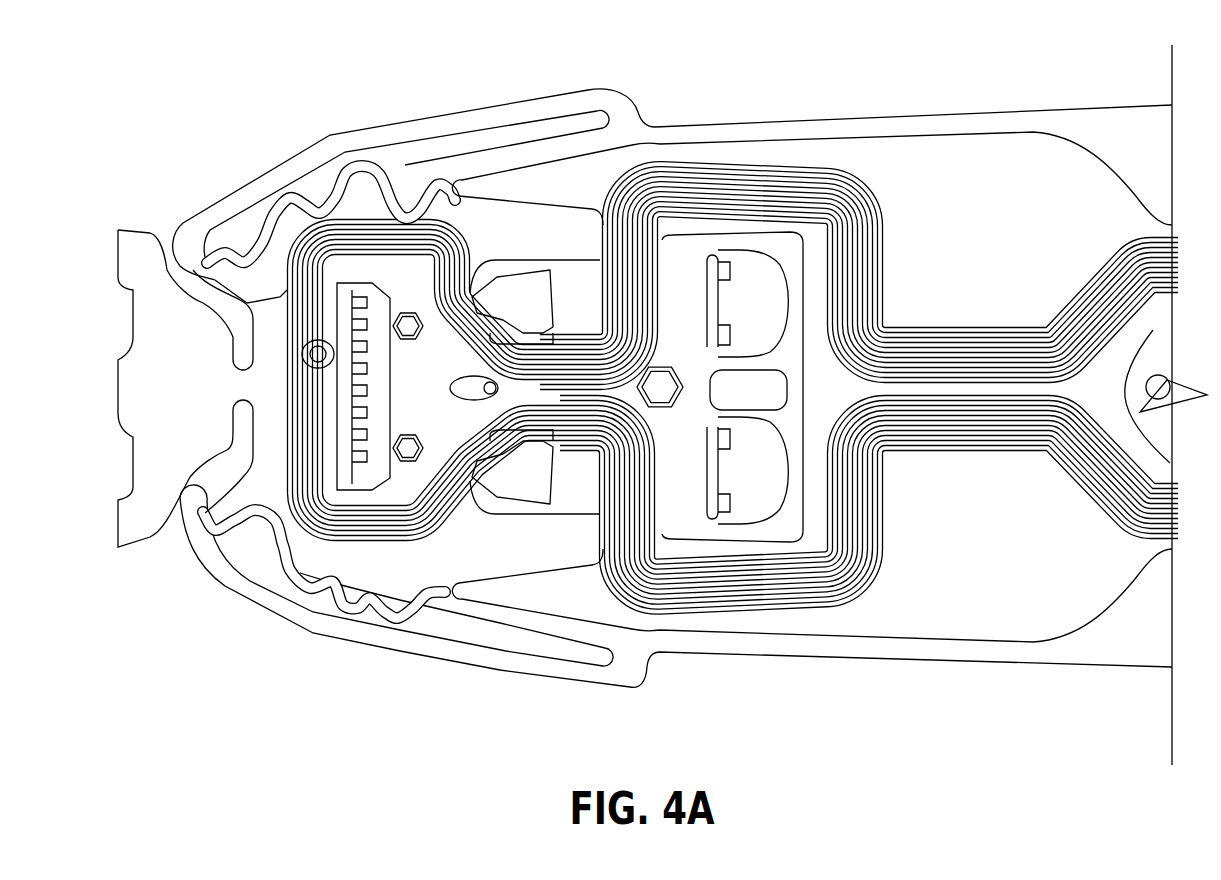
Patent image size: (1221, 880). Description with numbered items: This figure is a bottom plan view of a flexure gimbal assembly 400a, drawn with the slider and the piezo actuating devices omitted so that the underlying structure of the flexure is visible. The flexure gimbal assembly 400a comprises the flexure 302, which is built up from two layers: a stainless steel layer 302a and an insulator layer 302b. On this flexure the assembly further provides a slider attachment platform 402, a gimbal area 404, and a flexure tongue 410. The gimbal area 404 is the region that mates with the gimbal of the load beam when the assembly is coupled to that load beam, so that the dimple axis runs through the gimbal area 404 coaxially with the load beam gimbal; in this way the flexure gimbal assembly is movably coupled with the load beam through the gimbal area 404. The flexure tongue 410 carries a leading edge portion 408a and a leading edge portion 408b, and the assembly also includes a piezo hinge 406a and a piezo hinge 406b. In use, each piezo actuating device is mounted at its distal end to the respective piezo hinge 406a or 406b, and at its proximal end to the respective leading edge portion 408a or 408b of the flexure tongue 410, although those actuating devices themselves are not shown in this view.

The flexure gimbal assembly 400a is at (245, 60).
The flexure 302 is at (450, 110).
The stainless steel layer 302a is at (628, 112).
The insulator layer 302b is at (357, 552).
The slider attachment platform 402 is at (413, 403).
The gimbal area 404 is at (492, 398).
The piezo hinge 406a is at (553, 300).
The piezo hinge 406b is at (553, 473).
The leading edge portion 408a is at (795, 297).
The leading edge portion 408b is at (797, 477).
The flexure tongue 410 is at (680, 483).